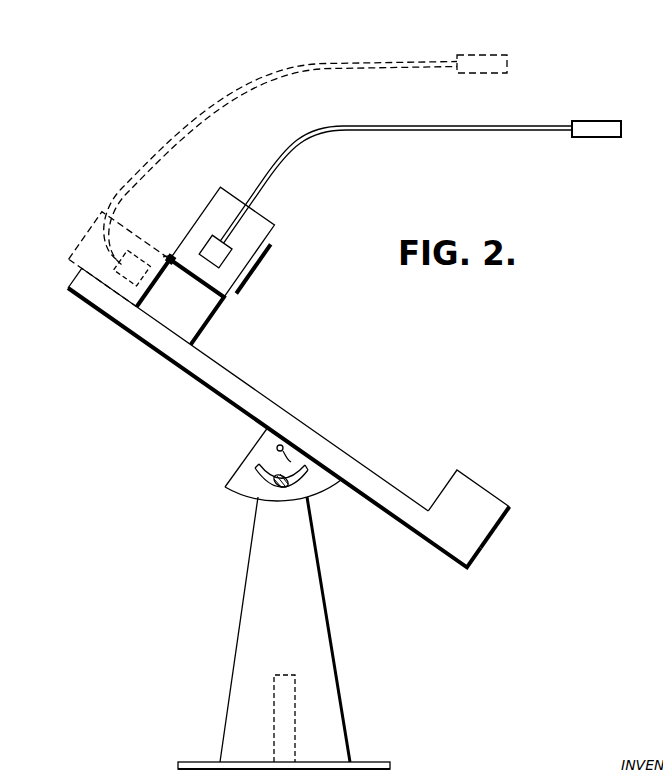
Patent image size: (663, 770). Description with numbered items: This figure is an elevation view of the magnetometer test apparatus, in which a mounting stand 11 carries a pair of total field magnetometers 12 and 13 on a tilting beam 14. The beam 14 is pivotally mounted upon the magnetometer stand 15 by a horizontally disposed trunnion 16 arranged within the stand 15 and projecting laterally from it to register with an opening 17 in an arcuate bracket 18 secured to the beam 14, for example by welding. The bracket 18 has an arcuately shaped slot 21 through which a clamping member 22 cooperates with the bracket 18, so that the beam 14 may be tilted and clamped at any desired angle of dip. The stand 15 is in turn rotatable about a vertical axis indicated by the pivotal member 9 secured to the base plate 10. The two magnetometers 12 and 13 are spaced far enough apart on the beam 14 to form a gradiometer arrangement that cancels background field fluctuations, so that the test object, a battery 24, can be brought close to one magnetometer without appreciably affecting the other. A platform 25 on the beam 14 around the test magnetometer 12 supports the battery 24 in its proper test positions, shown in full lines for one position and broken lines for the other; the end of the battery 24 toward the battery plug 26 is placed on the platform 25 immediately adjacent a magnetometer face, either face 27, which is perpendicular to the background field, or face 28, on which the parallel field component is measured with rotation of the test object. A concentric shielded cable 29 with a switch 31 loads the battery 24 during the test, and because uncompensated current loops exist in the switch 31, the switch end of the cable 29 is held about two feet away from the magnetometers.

The pivotal member 9 is at (296, 704).
The base plate 10 is at (381, 757).
The mounting stand 11 is at (249, 567).
The magnetometer 12 is at (211, 307).
The magnetometer 13 is at (513, 501).
The tilting beam 14 is at (257, 378).
The magnetometer stand 15 is at (291, 640).
The trunnion 16 is at (299, 460).
The opening 17 is at (277, 448).
The arcuate bracket 18 is at (261, 436).
The arcuately shaped slot 21 is at (290, 483).
The clamping member 22 is at (298, 498).
The battery 24 is at (256, 224).
The platform 25 is at (172, 257).
The battery plug 26 is at (232, 250).
The magnetometer face 27 is at (167, 257).
The magnetometer face 28 is at (233, 282).
The concentric shielded cable 29 is at (308, 72).
The switch 31 is at (495, 54).